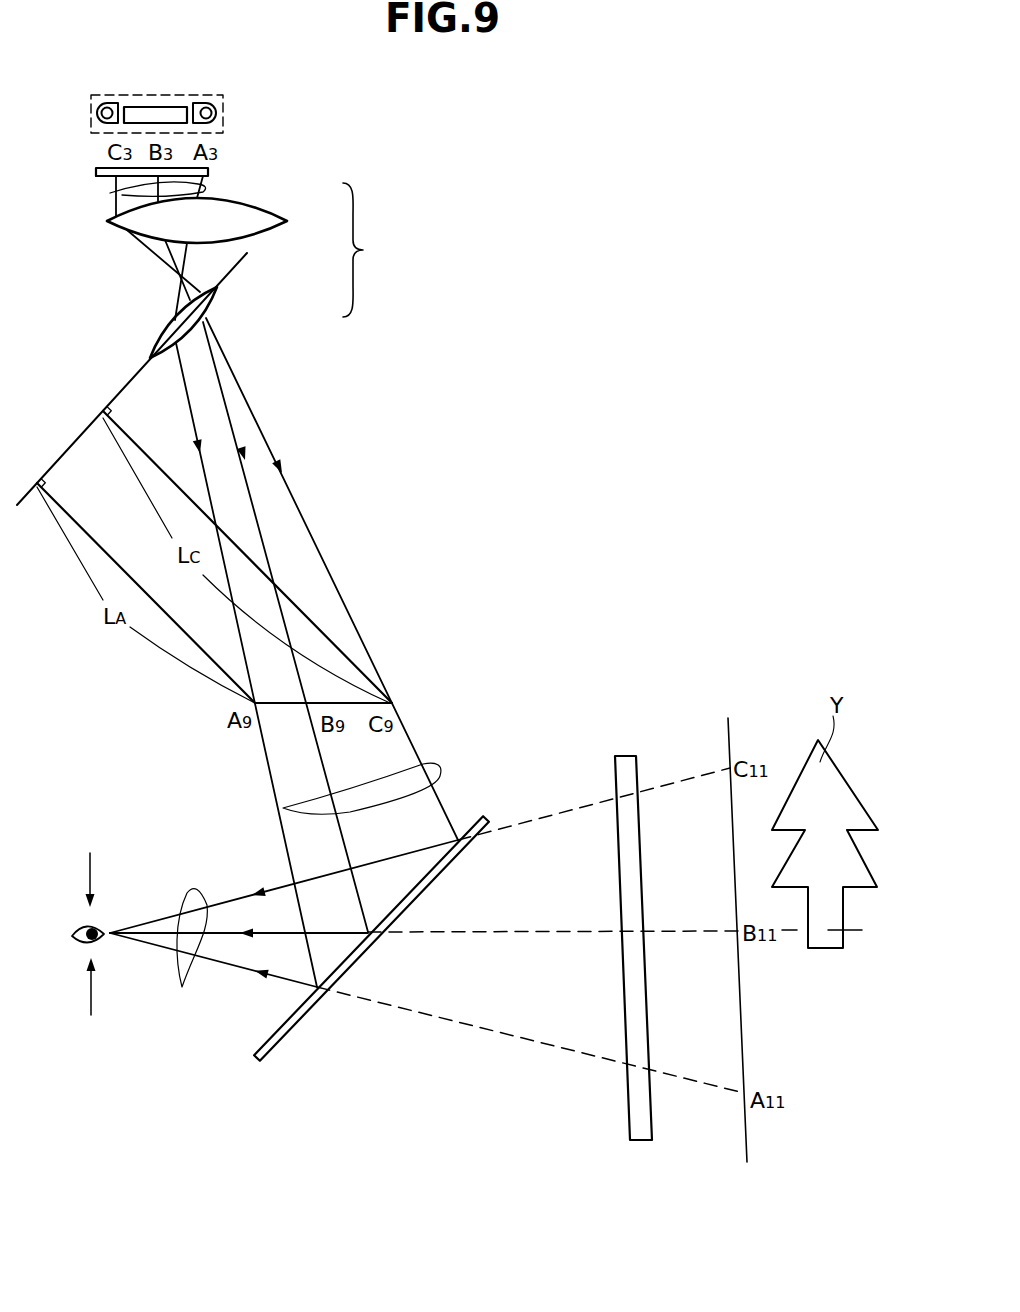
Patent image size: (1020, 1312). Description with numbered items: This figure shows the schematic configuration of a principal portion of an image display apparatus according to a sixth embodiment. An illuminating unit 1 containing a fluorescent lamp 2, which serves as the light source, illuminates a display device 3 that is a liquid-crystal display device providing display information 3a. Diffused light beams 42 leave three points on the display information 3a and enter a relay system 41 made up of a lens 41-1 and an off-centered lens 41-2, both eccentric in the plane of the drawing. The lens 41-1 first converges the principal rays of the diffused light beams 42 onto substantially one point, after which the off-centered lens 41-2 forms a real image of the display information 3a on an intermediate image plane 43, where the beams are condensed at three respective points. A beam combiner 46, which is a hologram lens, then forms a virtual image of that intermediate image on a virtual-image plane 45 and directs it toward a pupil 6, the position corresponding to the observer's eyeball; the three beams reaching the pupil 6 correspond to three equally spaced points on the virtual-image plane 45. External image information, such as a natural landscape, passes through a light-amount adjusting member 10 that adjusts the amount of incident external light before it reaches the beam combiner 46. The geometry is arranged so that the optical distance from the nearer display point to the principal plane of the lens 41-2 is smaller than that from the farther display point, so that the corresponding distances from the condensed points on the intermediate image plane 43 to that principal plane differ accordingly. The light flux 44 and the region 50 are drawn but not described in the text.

The illuminating unit 1 is at (223, 97).
The fluorescent lamp 2 is at (213, 113).
The display device 3 is at (210, 168).
The display information 3a is at (101, 175).
The diffused light beams 42 is at (110, 193).
The relay system 41 is at (372, 250).
The lens 41-1 is at (223, 220).
The off-centered lens 41-2 is at (213, 300).
The intermediate image plane 43 is at (355, 700).
The light flux 44 is at (283, 808).
The beam combiner 46 is at (485, 815).
The pupil 6 is at (82, 915).
The eye point region 50 is at (186, 953).
The light-amount adjusting member 10 is at (627, 758).
The virtual-image plane 45 is at (727, 742).